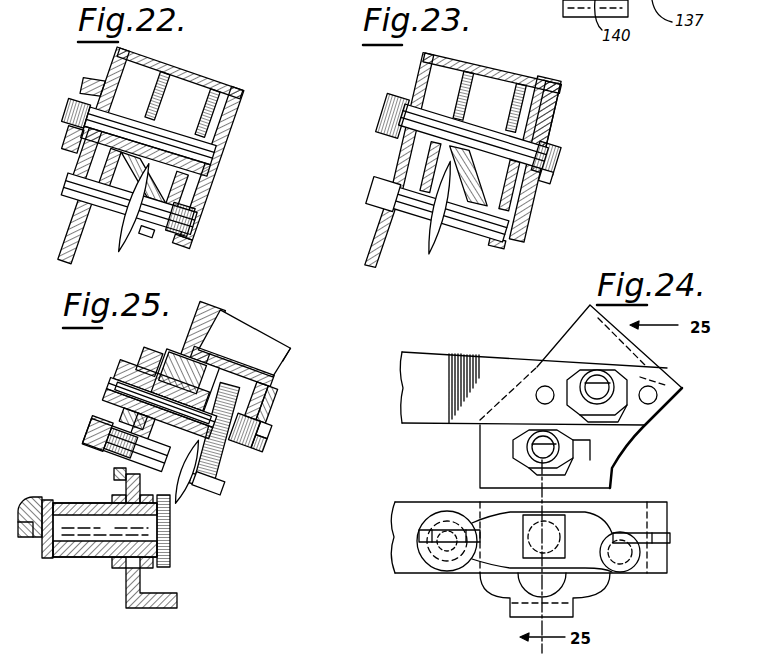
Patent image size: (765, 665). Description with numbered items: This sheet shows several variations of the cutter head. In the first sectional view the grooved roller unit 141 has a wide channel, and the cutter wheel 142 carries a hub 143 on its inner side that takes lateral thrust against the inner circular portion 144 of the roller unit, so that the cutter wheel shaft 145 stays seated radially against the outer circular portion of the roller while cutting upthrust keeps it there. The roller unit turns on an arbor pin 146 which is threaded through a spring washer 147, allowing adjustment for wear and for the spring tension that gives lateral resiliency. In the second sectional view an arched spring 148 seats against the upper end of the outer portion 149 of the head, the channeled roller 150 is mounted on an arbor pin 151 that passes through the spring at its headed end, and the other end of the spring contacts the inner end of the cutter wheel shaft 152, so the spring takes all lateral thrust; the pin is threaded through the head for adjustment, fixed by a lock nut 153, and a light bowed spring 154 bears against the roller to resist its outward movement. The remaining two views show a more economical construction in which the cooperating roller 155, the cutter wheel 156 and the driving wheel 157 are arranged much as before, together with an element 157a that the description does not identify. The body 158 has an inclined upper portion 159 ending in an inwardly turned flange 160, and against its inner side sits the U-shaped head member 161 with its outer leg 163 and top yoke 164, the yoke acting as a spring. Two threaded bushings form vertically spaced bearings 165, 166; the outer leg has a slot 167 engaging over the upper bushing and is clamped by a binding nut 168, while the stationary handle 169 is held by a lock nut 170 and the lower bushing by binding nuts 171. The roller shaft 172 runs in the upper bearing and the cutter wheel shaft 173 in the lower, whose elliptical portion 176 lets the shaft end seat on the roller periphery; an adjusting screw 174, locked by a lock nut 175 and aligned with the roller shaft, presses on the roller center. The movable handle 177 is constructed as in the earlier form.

In FIG. 22, the grooved roller unit 141 is at (172, 124).
In FIG. 22, the cutter wheel 142 is at (145, 220).
In FIG. 22, the hub 143 is at (150, 232).
In FIG. 22, the inner circular portion 144 is at (218, 105).
In FIG. 22, the cutter wheel shaft 145 is at (193, 228).
In FIG. 22, the arbor pin 146 is at (78, 106).
In FIG. 22, the spring washer 147 is at (108, 80).
In FIG. 23, the arched spring 148 is at (558, 117).
In FIG. 23, the outer portion of the head 149 is at (515, 198).
In FIG. 23, the grooved roller 150 is at (472, 100).
In FIG. 23, the arbor pin 151 is at (537, 163).
In FIG. 23, the cutter wheel shaft 152 is at (480, 230).
In FIG. 23, the lock nut 153 is at (410, 103).
In FIG. 23, the bowed spring 154 is at (418, 165).
In FIG. 25, the cooperating roller 155 is at (270, 397).
In FIG. 25, the cutter wheel 156 is at (185, 505).
In FIG. 25, the driving wheel 157 is at (165, 548).
In FIG. 25, the bolt head 157a is at (103, 527).
In FIG. 24, the bolt head 157a is at (530, 547).
In FIG. 25, the body 158 is at (127, 590).
In FIG. 24, the body 158 is at (513, 600).
In FIG. 25, the upper portion 159 is at (180, 352).
In FIG. 24, the upper portion 159 is at (567, 337).
In FIG. 25, the inwardly turned flange 160 is at (217, 313).
In FIG. 25, the U-shaped head member 161 is at (293, 347).
In FIG. 25, the outer leg portion 163 is at (168, 357).
In FIG. 25, the top yoke portion 164 is at (257, 342).
In FIG. 25, the bearing 165 is at (127, 390).
In FIG. 24, the bearing 165 is at (605, 370).
In FIG. 25, the bearing 166 is at (110, 420).
In FIG. 24, the bearing 166 is at (527, 437).
In FIG. 25, the slot 167 is at (217, 462).
In FIG. 25, the binding nut 168 is at (267, 377).
In FIG. 25, the stationary handle 169 is at (138, 350).
In FIG. 24, the stationary handle 169 is at (480, 355).
In FIG. 25, the lock nut 170 is at (133, 410).
In FIG. 24, the lock nut 170 is at (657, 410).
In FIG. 25, the binding nuts 171 is at (126, 482).
In FIG. 24, the binding nuts 171 is at (520, 448).
In FIG. 25, the roller shaft 172 is at (127, 380).
In FIG. 24, the roller shaft 172 is at (593, 383).
In FIG. 25, the cutter wheel shaft 173 is at (97, 437).
In FIG. 24, the cutter wheel shaft 173 is at (575, 455).
In FIG. 25, the adjusting screw 174 is at (270, 432).
In FIG. 25, the lock nut 175 is at (273, 418).
In FIG. 25, the elliptical portion of the bearing 176 is at (197, 493).
In FIG. 25, the movable handle 177 is at (143, 565).
In FIG. 24, the movable handle 177 is at (405, 568).